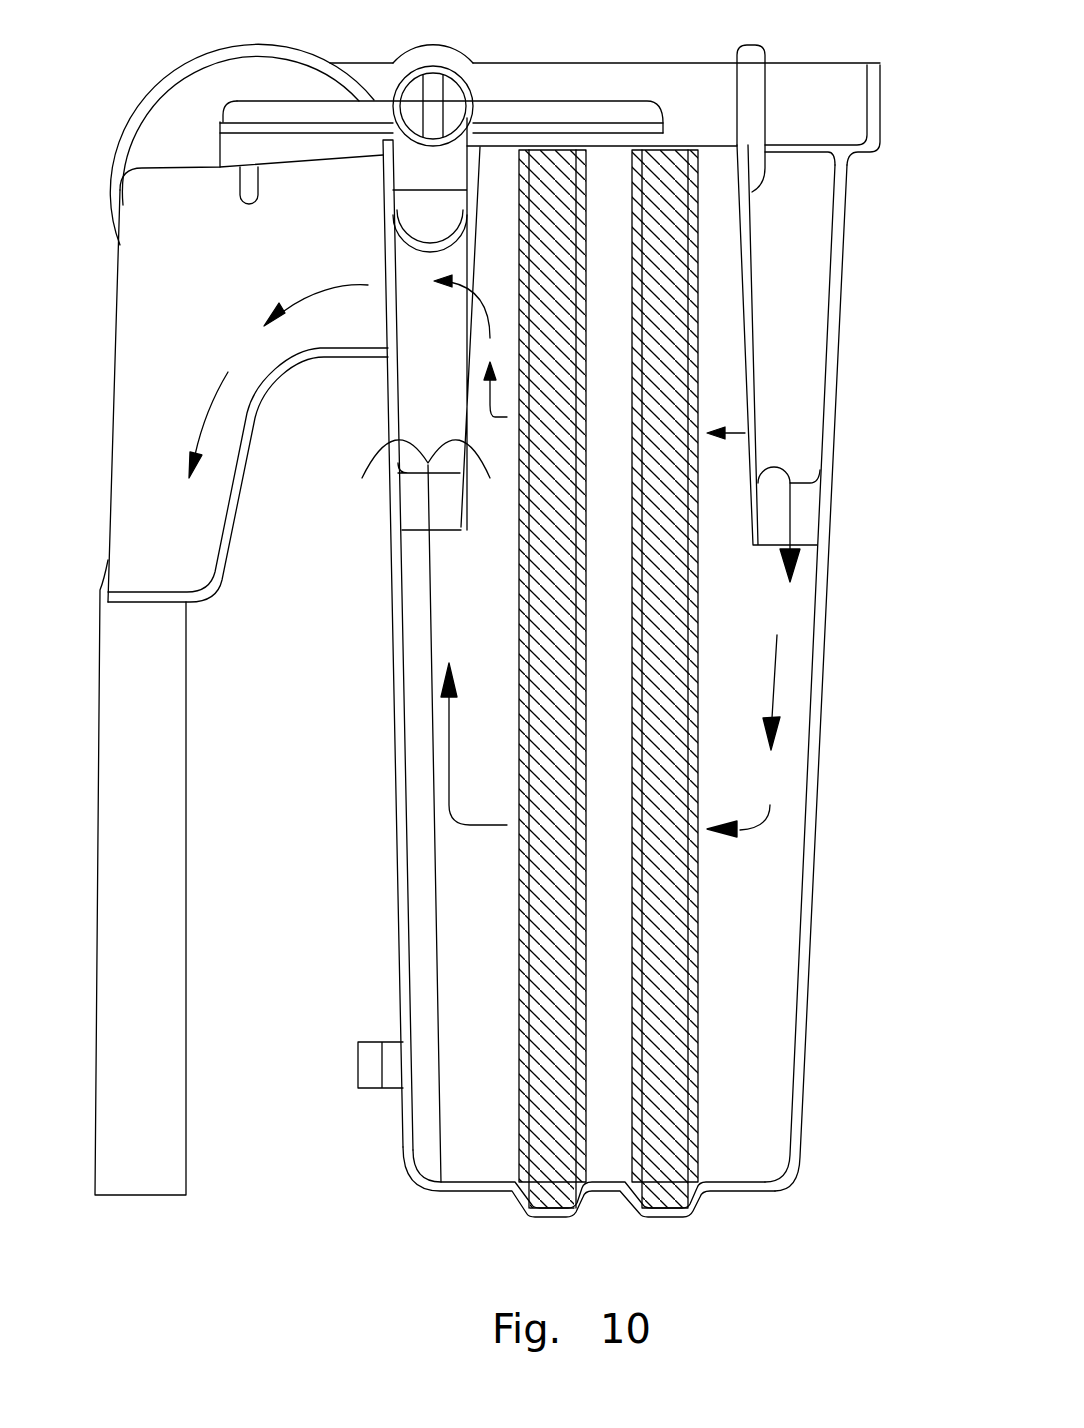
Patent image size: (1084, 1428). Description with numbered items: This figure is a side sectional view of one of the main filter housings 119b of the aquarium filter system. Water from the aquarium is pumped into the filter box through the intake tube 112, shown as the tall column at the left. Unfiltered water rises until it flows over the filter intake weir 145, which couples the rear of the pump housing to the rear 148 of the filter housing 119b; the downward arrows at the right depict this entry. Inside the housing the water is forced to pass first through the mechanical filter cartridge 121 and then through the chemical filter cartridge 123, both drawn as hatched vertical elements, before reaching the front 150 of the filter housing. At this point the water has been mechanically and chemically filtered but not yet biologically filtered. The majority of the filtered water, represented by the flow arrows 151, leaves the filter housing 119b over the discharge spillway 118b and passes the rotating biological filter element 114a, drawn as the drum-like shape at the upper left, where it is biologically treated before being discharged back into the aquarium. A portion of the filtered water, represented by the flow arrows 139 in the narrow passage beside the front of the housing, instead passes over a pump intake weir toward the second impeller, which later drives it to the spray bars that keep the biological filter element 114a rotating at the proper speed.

The biological filter element 114a is at (262, 72).
The discharge spillway 118b is at (275, 375).
The intake tube 112 is at (158, 915).
The flow arrows 151 is at (206, 432).
The filtered water inflow 139 is at (482, 827).
The front of the filter housing 150 is at (505, 1033).
The chemical filter element 123 is at (552, 1153).
The mechanical filter element 121 is at (665, 757).
The filter intake weir 145 is at (775, 468).
The rear of the filter housing 148 is at (765, 624).
The main filter housing 119b is at (805, 1098).